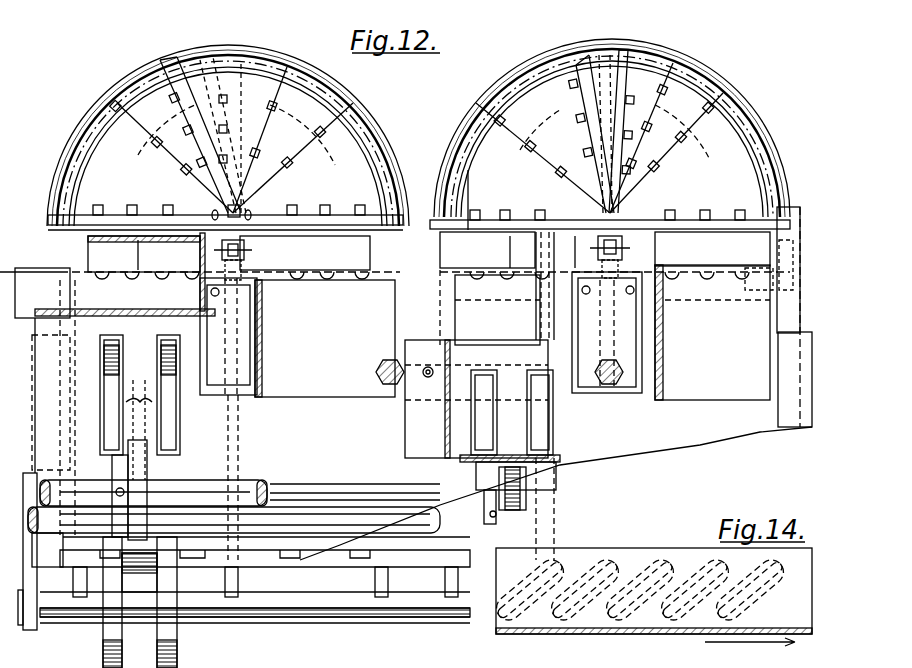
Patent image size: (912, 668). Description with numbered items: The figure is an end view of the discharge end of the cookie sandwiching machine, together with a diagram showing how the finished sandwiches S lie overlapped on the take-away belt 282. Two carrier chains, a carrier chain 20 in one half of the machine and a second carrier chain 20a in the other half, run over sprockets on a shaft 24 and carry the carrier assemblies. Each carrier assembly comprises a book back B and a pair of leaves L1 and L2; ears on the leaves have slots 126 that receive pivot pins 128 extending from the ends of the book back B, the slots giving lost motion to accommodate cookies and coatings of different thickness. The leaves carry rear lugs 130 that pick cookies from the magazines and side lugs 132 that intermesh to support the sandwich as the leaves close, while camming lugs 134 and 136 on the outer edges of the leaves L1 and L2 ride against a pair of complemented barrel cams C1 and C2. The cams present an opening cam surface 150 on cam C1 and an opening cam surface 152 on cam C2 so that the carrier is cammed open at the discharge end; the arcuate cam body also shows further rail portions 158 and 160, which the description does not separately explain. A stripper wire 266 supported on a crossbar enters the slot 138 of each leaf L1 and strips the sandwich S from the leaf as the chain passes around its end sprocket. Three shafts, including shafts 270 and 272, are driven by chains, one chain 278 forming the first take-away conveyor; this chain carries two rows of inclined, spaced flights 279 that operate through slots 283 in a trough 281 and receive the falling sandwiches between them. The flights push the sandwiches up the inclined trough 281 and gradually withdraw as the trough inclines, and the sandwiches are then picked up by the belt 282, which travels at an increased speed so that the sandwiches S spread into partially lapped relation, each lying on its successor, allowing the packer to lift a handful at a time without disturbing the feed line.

In FIG. 12, the opening cam surface of C¹ 150 is at (117, 93).
In FIG. 12, the opening cam surface of C² 152 is at (382, 135).
In FIG. 12, the inner arcuate rail 158 is at (82, 150).
In FIG. 12, the arcuate rim 160 is at (370, 100).
In FIG. 12, the camming lug 134 is at (163, 77).
In FIG. 12, the camming lug 136 is at (243, 55).
In FIG. 12, the side lugs 132 is at (107, 228).
In FIG. 12, the rear lugs 130 is at (290, 218).
In FIG. 12, the carrier chain 20 is at (252, 250).
In FIG. 12, the second carrier chain 20a is at (624, 250).
In FIG. 12, the stripper wire 266 is at (140, 257).
In FIG. 12, the trough 281 is at (130, 322).
In FIG. 12, the flights 279 is at (172, 384).
In FIG. 12, the slots 283 is at (532, 350).
In FIG. 12, the chain 278 is at (143, 460).
In FIG. 12, the shaft 272 is at (245, 487).
In FIG. 12, the shaft 270 is at (357, 499).
In FIG. 12, the shaft 24 is at (345, 470).
In FIG. 12, the slots 126 is at (650, 233).
In FIG. 12, the slot 138 is at (515, 233).
In FIG. 12, the pivot pins 128 is at (585, 233).
In FIG. 14, the belt 282 is at (565, 634).
In FIG. 12, the book back B is at (245, 330).
In FIG. 12, the sandwiches S is at (475, 188).
In FIG. 14, the sandwiches S is at (565, 572).
In FIG. 12, the barrel cam C1 is at (90, 115).
In FIG. 12, the barrel cam C2 is at (633, 43).
In FIG. 12, the leaf L1 is at (132, 115).
In FIG. 12, the leaf L2 is at (277, 128).